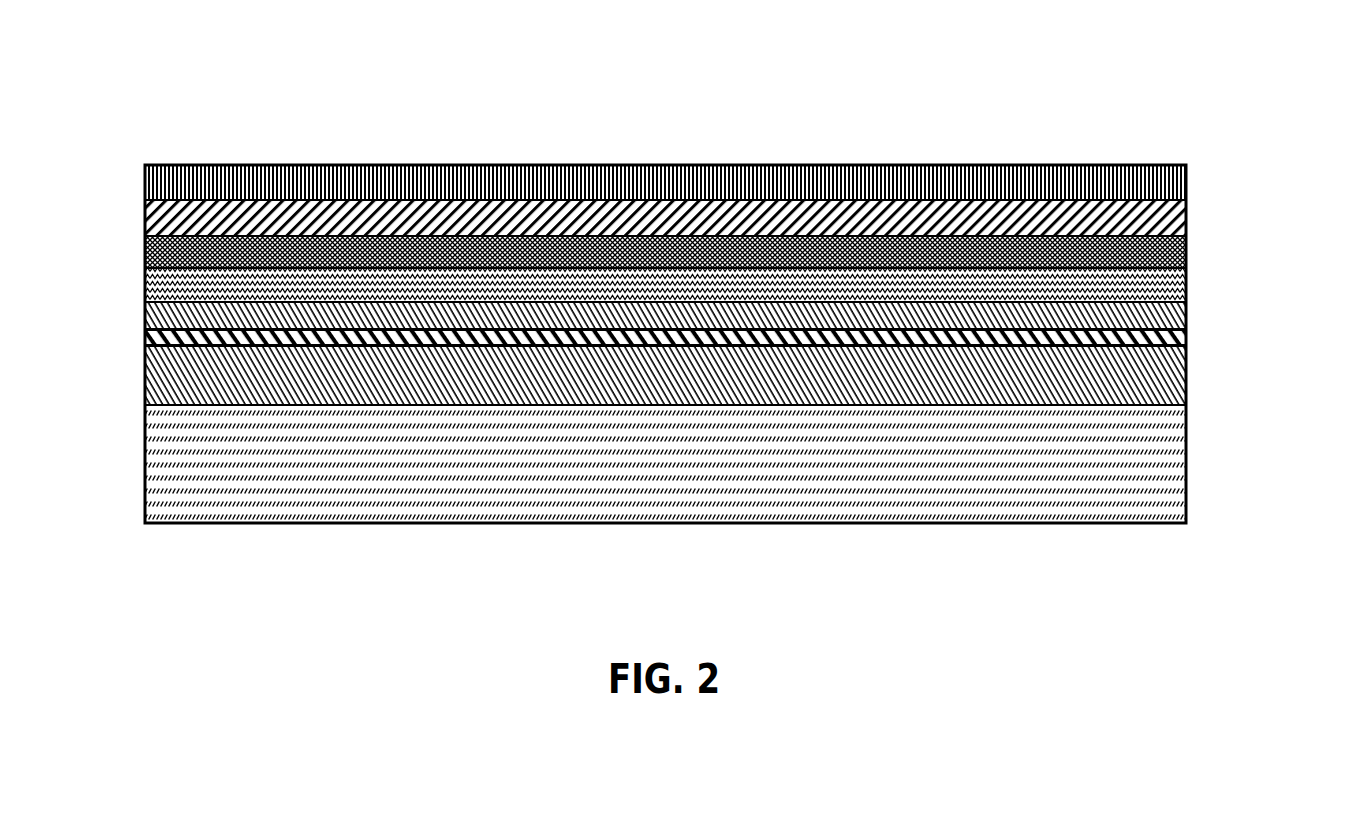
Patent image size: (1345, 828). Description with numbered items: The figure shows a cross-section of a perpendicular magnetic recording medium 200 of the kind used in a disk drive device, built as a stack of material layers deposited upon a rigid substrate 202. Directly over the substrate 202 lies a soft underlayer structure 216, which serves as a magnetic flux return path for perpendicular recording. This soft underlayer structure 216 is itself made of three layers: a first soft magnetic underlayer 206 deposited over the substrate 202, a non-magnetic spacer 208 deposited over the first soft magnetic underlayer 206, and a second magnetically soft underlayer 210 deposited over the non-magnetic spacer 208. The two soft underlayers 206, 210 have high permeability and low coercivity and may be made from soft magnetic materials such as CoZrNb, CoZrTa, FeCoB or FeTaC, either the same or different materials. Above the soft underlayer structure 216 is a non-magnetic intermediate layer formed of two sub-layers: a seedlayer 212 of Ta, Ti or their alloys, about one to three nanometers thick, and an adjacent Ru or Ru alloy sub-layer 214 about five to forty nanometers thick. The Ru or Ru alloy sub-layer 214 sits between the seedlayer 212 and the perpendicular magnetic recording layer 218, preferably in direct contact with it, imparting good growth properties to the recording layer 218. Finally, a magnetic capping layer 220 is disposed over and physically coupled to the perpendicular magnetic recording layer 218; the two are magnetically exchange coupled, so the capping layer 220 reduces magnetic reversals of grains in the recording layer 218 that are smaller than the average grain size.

The magnetic recording medium 200 is at (696, 317).
The rigid substrate 202 is at (680, 524).
The first soft magnetic underlayer 206 is at (1186, 386).
The non-magnetic spacer 208 is at (1186, 338).
The second magnetically soft underlayer 210 is at (1186, 312).
The seedlayer 212 is at (1186, 285).
The Ru or Ru alloy sub-layer 214 is at (1186, 250).
The soft underlayer structure 216 is at (137, 303).
The perpendicular magnetic recording layer 218 is at (1186, 218).
The magnetic capping layer 220 is at (933, 165).